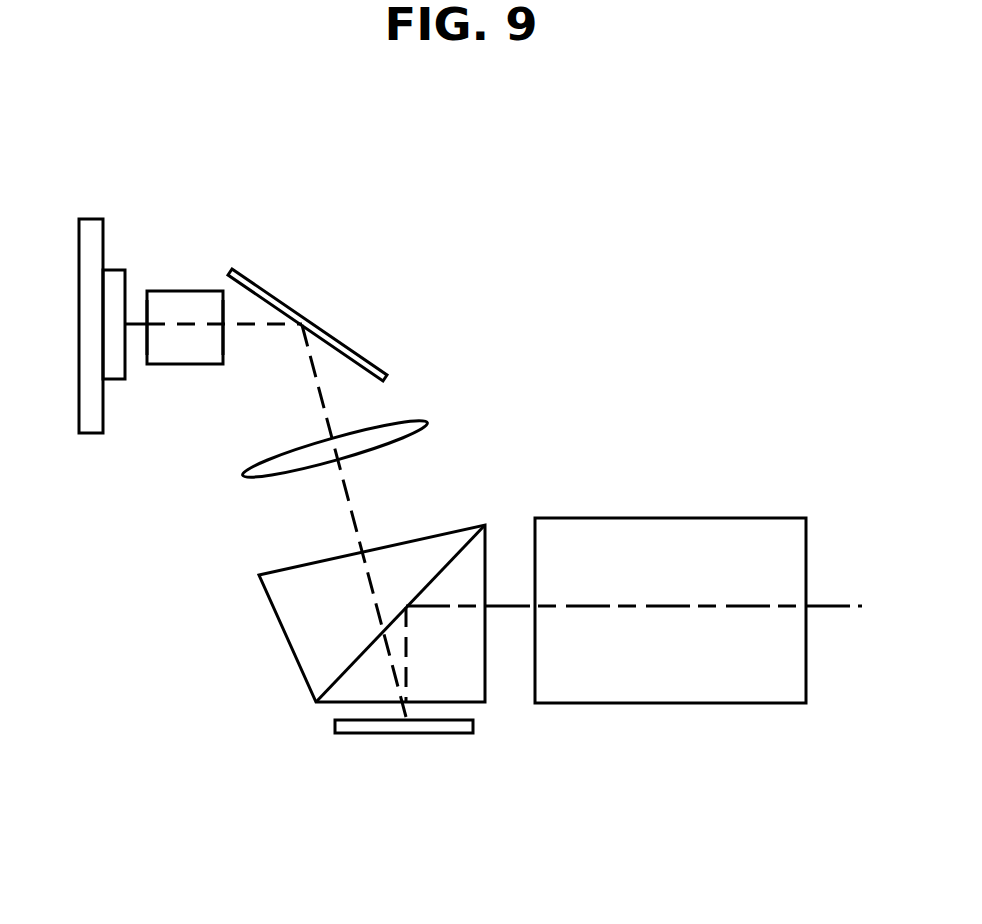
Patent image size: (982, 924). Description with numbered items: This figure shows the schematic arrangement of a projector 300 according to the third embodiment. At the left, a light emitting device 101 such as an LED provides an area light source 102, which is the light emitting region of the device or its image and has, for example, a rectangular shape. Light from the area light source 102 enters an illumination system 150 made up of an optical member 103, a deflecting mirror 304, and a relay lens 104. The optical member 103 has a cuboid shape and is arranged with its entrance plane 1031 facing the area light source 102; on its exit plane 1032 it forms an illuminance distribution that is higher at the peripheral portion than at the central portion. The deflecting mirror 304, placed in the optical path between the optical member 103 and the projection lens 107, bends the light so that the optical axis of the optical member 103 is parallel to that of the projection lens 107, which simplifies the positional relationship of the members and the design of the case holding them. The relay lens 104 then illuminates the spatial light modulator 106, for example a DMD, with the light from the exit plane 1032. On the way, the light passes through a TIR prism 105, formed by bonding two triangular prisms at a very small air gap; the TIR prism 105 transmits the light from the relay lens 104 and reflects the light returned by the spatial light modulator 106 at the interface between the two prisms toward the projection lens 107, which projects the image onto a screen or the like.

The light emitting device 101 is at (92, 433).
The area light source 102 is at (113, 370).
The optical member 103 is at (177, 297).
The entrance plane 1031 is at (145, 348).
The exit plane 1032 is at (223, 345).
The deflecting mirror 304 is at (287, 297).
The illumination system 150 is at (302, 157).
The relay lens 104 is at (414, 420).
The TIR prism 105 is at (283, 630).
The spatial light modulator 106 is at (388, 733).
The projection lens 107 is at (628, 518).
The projector 300 is at (480, 909).